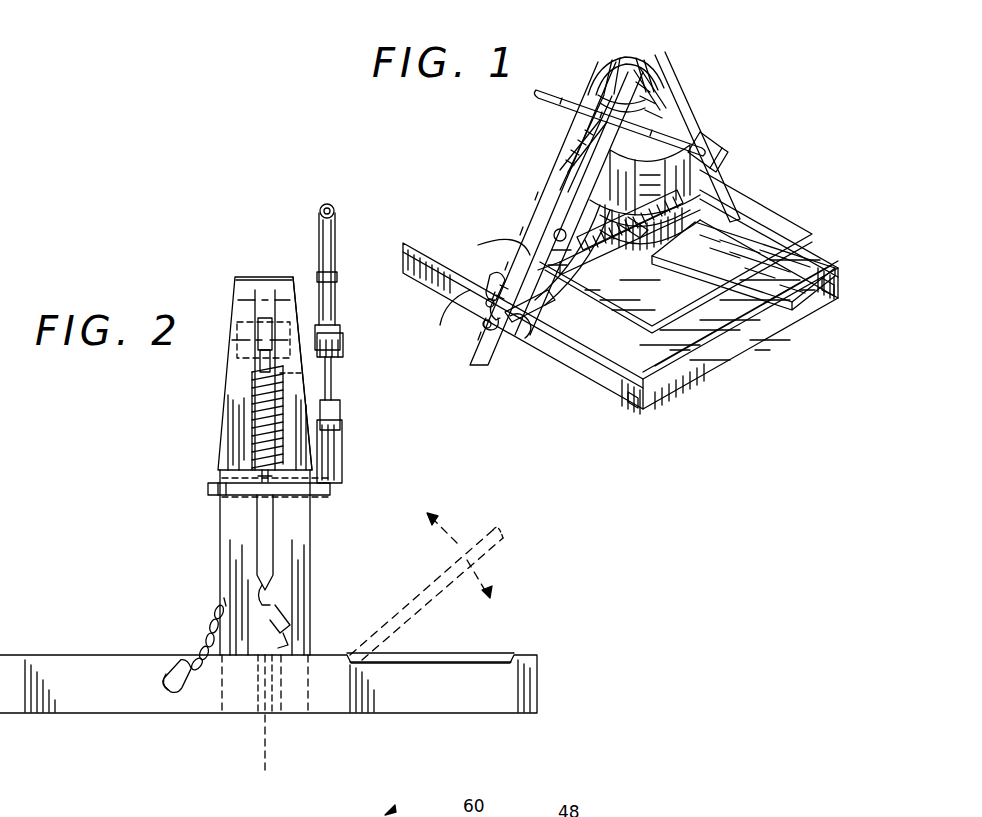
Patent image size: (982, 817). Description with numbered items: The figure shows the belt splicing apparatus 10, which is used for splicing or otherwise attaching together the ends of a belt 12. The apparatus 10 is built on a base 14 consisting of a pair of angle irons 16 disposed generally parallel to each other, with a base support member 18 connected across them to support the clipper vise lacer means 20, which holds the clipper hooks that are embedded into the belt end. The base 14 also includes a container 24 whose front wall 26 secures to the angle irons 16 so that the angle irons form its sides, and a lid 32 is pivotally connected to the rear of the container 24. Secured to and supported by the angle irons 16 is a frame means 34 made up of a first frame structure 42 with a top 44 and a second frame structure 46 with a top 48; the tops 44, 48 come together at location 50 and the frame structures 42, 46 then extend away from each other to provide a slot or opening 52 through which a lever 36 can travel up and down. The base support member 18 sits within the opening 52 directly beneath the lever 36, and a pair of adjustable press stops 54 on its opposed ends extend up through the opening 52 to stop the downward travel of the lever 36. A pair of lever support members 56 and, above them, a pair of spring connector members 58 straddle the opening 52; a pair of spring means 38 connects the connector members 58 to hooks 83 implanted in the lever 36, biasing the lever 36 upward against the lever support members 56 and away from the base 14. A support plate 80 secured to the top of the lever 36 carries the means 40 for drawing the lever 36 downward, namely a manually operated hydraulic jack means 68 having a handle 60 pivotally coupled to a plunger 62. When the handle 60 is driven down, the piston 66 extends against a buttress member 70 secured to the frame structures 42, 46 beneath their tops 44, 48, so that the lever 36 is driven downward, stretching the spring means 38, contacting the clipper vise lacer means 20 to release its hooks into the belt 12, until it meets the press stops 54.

In FIG. 1, the belt splicing apparatus 10 is at (700, 131).
In FIG. 1, the belt 12 is at (770, 312).
In FIG. 1, the base 14 is at (518, 346).
In FIG. 1, the angle irons 16 is at (628, 396).
In FIG. 2, the angle irons 16 is at (518, 683).
In FIG. 1, the base support member 18 is at (700, 211).
In FIG. 2, the base support member 18 is at (265, 724).
In FIG. 1, the clipper vise lacer means 20 is at (668, 205).
In FIG. 2, the clipper vise lacer means 20 is at (265, 566).
In FIG. 1, the container 24 is at (724, 350).
In FIG. 1, the front wall 26 is at (688, 372).
In FIG. 1, the lid 32 is at (798, 243).
In FIG. 2, the lid 32 is at (497, 520).
In FIG. 1, the frame means 34 is at (530, 213).
In FIG. 1, the lever 36 is at (565, 210).
In FIG. 2, the lever 36 is at (242, 575).
In FIG. 1, the spring means 38 is at (572, 170).
In FIG. 2, the spring means 38 is at (258, 438).
In FIG. 1, the means for drawing the lever downwardly 40 is at (662, 92).
In FIG. 1, the first frame structure 42 is at (490, 285).
In FIG. 2, the first frame structure 42 is at (237, 517).
In FIG. 1, the top of first frame structure 44 is at (614, 64).
In FIG. 2, the top of first frame structure 44 is at (243, 285).
In FIG. 1, the second frame structure 46 is at (545, 285).
In FIG. 2, the second frame structure 46 is at (298, 523).
In FIG. 1, the top of second frame structure 48 is at (634, 74).
In FIG. 2, the top of second frame structure 48 is at (287, 277).
In FIG. 1, the joining location of frame tops 50 is at (612, 68).
In FIG. 2, the joining location of frame tops 50 is at (262, 300).
In FIG. 1, the slot or opening 52 is at (500, 320).
In FIG. 2, the slot or opening 52 is at (273, 612).
In FIG. 1, the press stops 54 is at (518, 322).
In FIG. 2, the press stops 54 is at (268, 655).
In FIG. 1, the lever support members 56 is at (563, 173).
In FIG. 2, the lever support members 56 is at (318, 483).
In FIG. 1, the spring connector members 58 is at (572, 100).
In FIG. 2, the spring connector members 58 is at (256, 370).
In FIG. 1, the handle 60 is at (603, 75).
In FIG. 2, the handle 60 is at (330, 277).
In FIG. 2, the plunger 62 is at (338, 396).
In FIG. 2, the piston 66 is at (268, 334).
In FIG. 1, the hydraulic jack means 68 is at (639, 252).
In FIG. 2, the hydraulic jack means 68 is at (220, 398).
In FIG. 1, the buttress member 70 is at (672, 54).
In FIG. 1, the support plate 80 is at (598, 262).
In FIG. 2, the support plate 80 is at (208, 483).
In FIG. 2, the hooks 83 is at (222, 488).